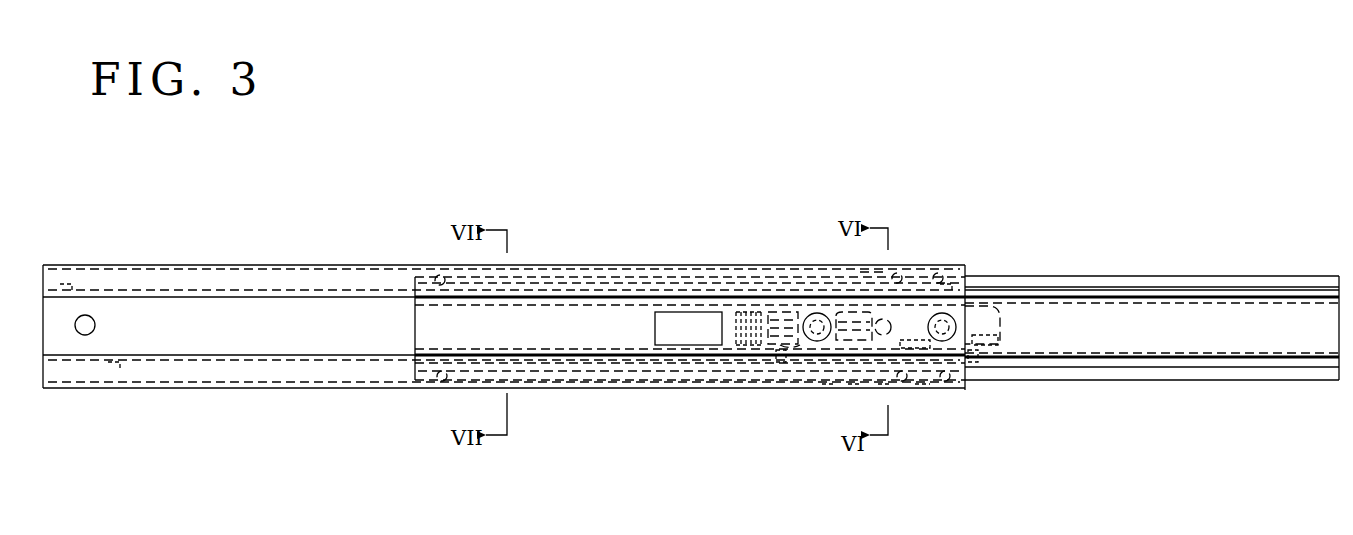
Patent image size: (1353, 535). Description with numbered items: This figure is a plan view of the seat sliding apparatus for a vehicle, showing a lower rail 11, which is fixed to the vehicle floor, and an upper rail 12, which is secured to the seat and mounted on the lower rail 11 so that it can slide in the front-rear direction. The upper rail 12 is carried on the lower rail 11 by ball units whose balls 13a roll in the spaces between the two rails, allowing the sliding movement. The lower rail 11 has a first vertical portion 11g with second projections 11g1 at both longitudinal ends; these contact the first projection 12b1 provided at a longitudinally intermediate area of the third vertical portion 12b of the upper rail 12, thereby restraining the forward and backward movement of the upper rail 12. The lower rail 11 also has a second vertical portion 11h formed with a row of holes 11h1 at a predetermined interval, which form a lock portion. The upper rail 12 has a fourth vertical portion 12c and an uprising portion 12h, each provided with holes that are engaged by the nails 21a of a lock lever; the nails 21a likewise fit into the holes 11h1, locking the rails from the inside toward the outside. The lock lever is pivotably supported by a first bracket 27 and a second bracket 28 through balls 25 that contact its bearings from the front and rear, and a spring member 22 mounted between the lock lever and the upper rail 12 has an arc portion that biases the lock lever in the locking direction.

The lower rail 11 is at (335, 265).
The first vertical portion 11g is at (148, 290).
The second projection 11g1 is at (66, 288).
The second vertical portion 11h is at (80, 362).
The hole 11h1 is at (113, 362).
The upper rail 12 is at (1163, 276).
The third vertical portion 12b is at (1228, 297).
The first projection 12b1 is at (872, 272).
The fourth vertical portion 12c is at (1240, 358).
The uprising portion 12h is at (1180, 368).
The ball 13a is at (438, 276).
The nail 21a is at (883, 388).
The spring member 22 is at (790, 322).
The ball 25 is at (781, 362).
The first bracket 27 is at (1004, 312).
The second bracket 28 is at (748, 312).